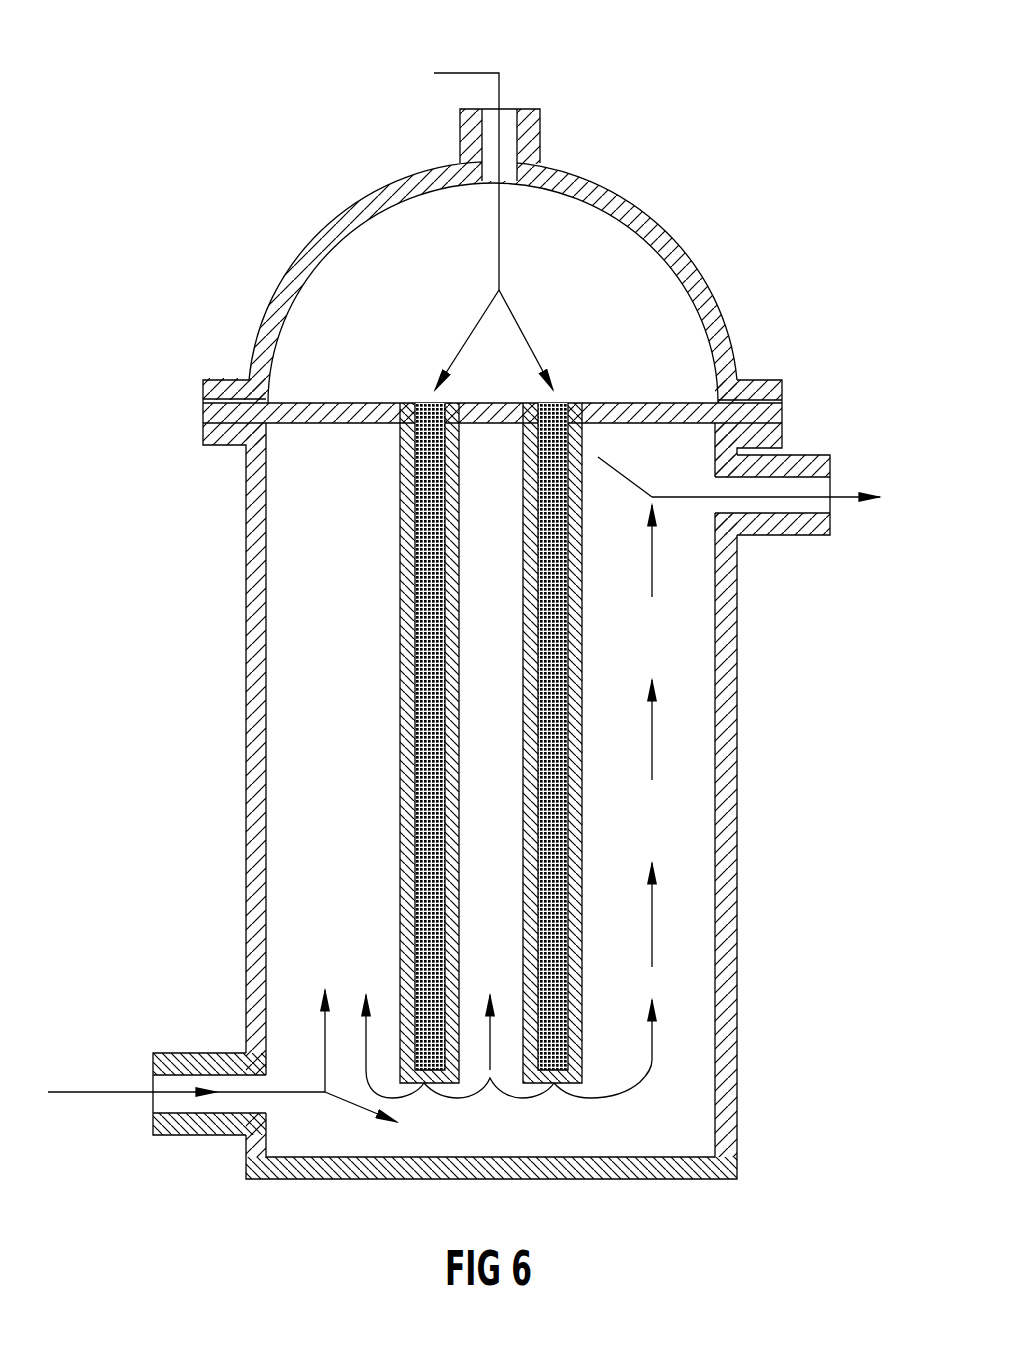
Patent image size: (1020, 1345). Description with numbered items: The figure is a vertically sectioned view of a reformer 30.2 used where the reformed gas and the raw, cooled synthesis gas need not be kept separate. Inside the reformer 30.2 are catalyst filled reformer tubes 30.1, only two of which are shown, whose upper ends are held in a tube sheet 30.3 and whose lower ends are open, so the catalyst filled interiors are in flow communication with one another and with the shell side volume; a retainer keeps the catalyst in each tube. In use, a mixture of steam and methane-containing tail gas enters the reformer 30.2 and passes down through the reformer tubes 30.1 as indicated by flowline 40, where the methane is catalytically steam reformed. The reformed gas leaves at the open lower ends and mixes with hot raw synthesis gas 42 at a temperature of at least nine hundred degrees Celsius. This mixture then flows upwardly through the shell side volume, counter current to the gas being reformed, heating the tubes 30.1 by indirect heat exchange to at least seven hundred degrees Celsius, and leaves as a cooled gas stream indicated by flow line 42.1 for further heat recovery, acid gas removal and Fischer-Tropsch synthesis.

The reformer tubes 30.1 is at (543, 663).
The reformer 30.2 is at (748, 1047).
The tube sheet 30.3 is at (667, 403).
The flowline of reformed gas stream 40 is at (473, 72).
The raw synthesis gas stream 42 is at (112, 1095).
The cooled gas stream flow line 42.1 is at (850, 503).